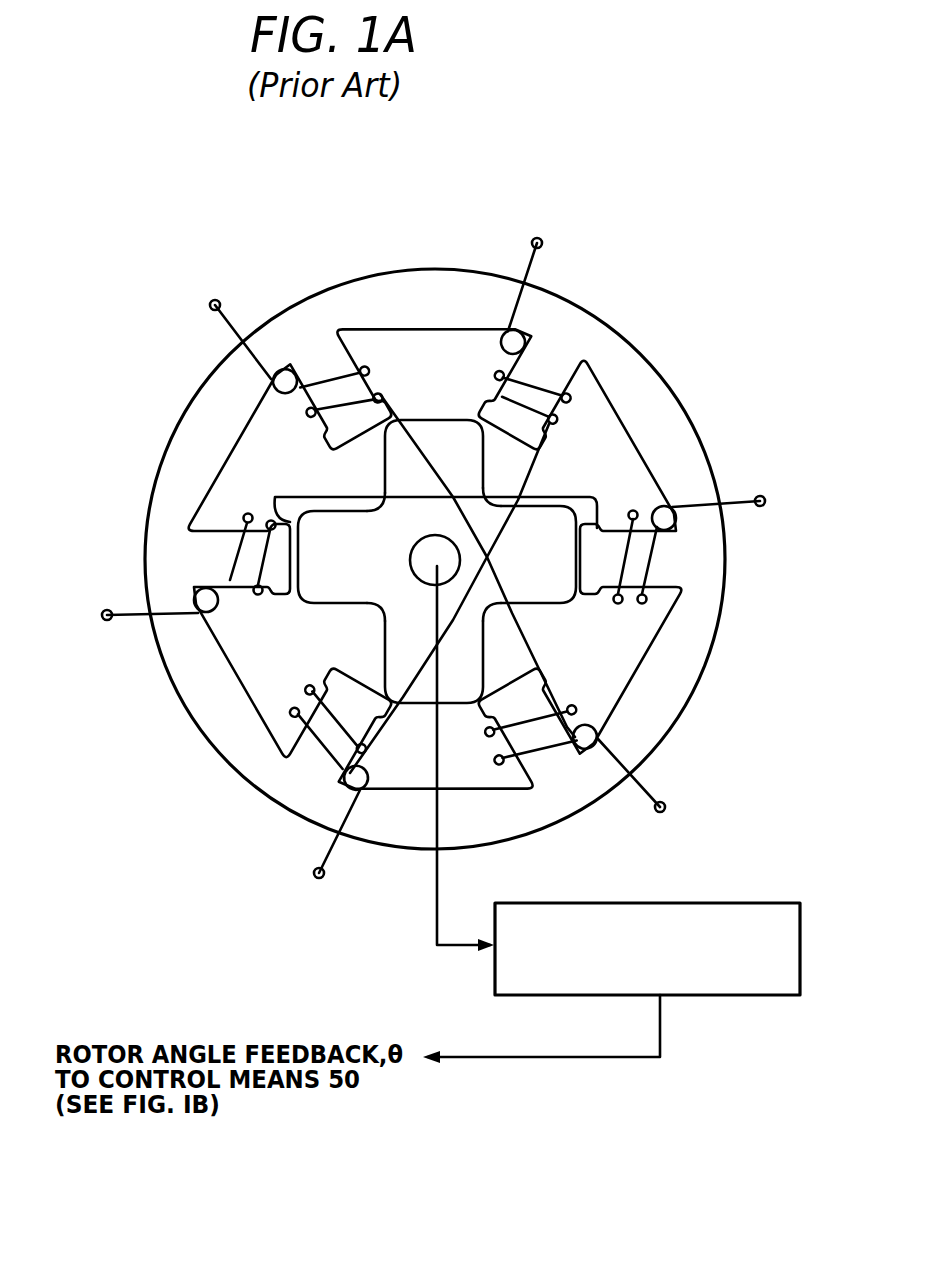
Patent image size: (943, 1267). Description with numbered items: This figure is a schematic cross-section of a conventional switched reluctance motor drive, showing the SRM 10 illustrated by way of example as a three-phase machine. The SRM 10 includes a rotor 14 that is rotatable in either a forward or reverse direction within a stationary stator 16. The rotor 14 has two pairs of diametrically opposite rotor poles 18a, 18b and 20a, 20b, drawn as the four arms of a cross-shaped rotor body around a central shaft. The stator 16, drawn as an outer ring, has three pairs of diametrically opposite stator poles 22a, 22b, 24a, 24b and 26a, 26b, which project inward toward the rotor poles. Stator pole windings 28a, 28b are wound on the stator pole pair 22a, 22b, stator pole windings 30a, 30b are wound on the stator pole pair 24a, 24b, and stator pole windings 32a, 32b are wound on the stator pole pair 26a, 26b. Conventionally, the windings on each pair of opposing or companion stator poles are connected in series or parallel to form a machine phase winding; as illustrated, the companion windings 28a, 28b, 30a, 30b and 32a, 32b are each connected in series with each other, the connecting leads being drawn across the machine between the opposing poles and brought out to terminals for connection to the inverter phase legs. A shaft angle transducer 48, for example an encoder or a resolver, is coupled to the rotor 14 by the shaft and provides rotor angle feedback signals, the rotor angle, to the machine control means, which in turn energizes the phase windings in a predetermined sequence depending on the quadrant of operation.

The SRM 10 is at (632, 292).
The rotor 14 is at (443, 561).
The stator 16 is at (208, 410).
The rotor pole 18a is at (330, 596).
The rotor pole 18b is at (560, 520).
The rotor pole 20a is at (441, 430).
The rotor pole 20b is at (423, 693).
The stator pole 22a is at (219, 523).
The stator pole 22b is at (667, 507).
The stator pole 24a is at (347, 347).
The stator pole 24b is at (547, 819).
The stator pole 26a is at (592, 376).
The stator pole 26b is at (297, 740).
The stator pole winding 28a is at (257, 590).
The stator pole winding 28b is at (657, 553).
The stator pole winding 30a is at (318, 378).
The stator pole winding 30b is at (603, 728).
The stator pole winding 32a is at (503, 377).
The stator pole winding 32b is at (323, 748).
The shaft angle transducer 48 is at (733, 998).